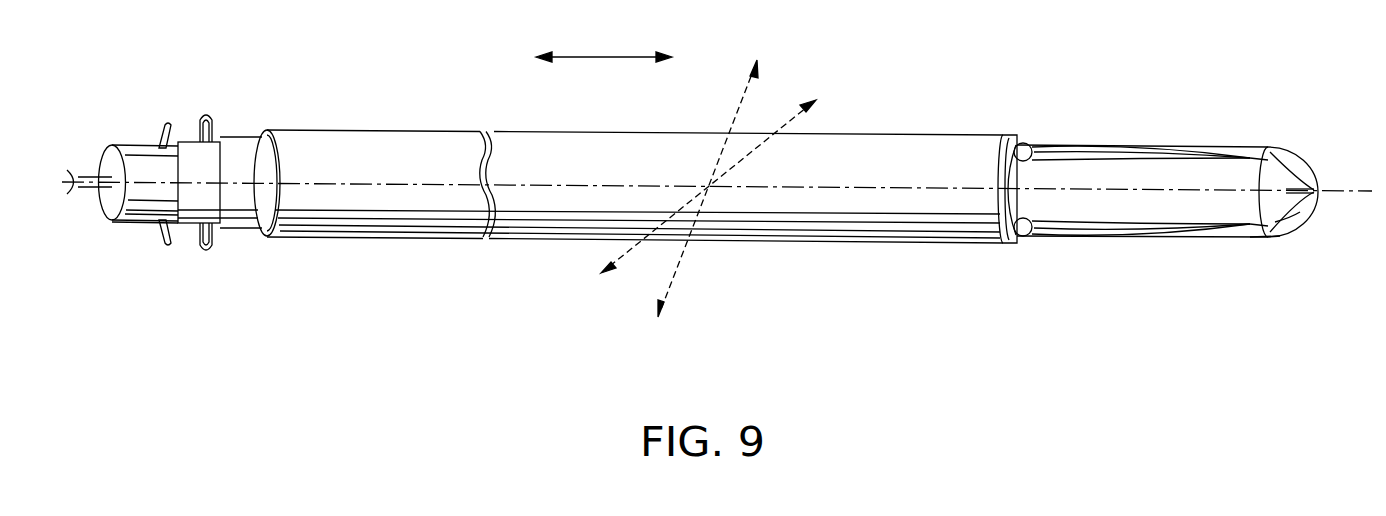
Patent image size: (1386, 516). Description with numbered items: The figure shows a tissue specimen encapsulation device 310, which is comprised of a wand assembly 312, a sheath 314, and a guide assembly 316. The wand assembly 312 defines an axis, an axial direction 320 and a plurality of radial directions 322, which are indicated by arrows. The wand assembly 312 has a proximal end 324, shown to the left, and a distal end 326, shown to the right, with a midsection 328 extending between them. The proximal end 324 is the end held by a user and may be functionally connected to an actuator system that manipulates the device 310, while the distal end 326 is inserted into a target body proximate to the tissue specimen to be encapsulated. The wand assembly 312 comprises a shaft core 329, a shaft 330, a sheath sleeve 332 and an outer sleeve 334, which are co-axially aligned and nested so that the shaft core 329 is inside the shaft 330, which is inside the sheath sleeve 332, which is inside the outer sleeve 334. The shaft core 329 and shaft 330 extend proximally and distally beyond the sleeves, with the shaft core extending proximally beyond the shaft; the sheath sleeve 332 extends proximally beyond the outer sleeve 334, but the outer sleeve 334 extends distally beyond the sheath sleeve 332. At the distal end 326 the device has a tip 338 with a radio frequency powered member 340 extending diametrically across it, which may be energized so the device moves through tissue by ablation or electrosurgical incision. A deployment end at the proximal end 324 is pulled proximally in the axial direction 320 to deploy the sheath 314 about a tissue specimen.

The tissue specimen encapsulation device 310 is at (963, 102).
The wand assembly 312 is at (443, 123).
The sheath 314 is at (1014, 142).
The guide assembly 316 is at (175, 242).
The axial direction 320 is at (603, 55).
The radial directions 322 is at (787, 118).
The proximal end 324 is at (110, 146).
The distal end 326 is at (1273, 236).
The midsection 328 is at (758, 243).
The shaft core 329 is at (147, 222).
The shaft 330 is at (183, 142).
The sheath sleeve 332 is at (235, 136).
The outer sleeve 334 is at (415, 239).
The tip 338 is at (1305, 152).
The RF powered member 340 is at (1318, 190).